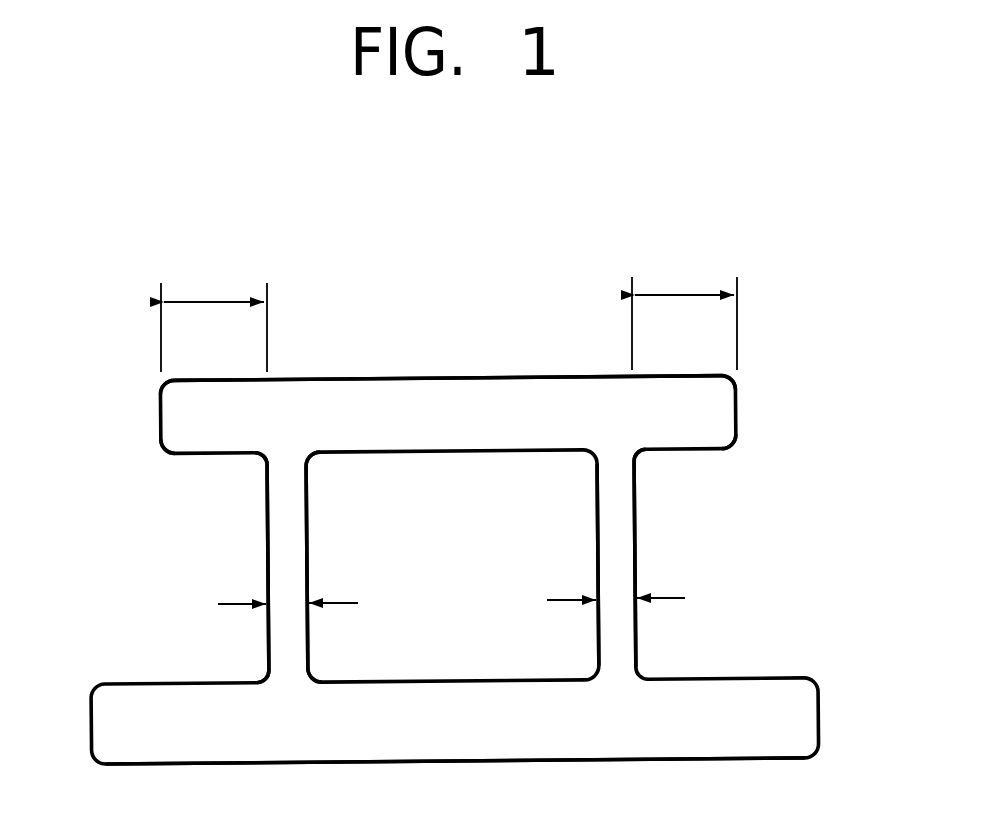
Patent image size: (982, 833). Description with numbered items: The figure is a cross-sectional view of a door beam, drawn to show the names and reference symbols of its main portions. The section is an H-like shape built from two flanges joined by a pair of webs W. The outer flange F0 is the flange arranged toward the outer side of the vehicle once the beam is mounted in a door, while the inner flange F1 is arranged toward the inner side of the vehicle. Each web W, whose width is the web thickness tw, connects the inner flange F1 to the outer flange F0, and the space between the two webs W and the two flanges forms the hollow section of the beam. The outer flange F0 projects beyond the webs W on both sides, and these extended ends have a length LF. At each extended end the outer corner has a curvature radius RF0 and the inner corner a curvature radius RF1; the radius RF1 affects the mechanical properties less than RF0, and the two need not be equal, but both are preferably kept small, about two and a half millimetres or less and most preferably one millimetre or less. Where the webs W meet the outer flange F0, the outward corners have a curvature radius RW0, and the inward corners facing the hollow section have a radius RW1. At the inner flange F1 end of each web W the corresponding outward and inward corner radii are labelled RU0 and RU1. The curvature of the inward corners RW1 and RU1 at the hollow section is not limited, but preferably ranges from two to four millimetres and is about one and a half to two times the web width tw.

The outer flange F0 is at (440, 400).
The inner flange F1 is at (447, 733).
The length of the extended ends LF is at (449, 313).
The web width tw is at (293, 603).
The web W is at (297, 540).
The curvature radius of the outer corners of the extended ends RF0 is at (158, 391).
The curvature radius of the inner corners of the extended ends RF1 is at (160, 452).
The curvature radius of the outward corners of the outer flange-web connections RW0 is at (258, 462).
The web-to-upper-flange inner fillet radius RW1 is at (315, 462).
The web-to-lower-flange outer fillet radius RU0 is at (258, 672).
The web-to-lower-flange inner fillet radius RU1 is at (317, 670).